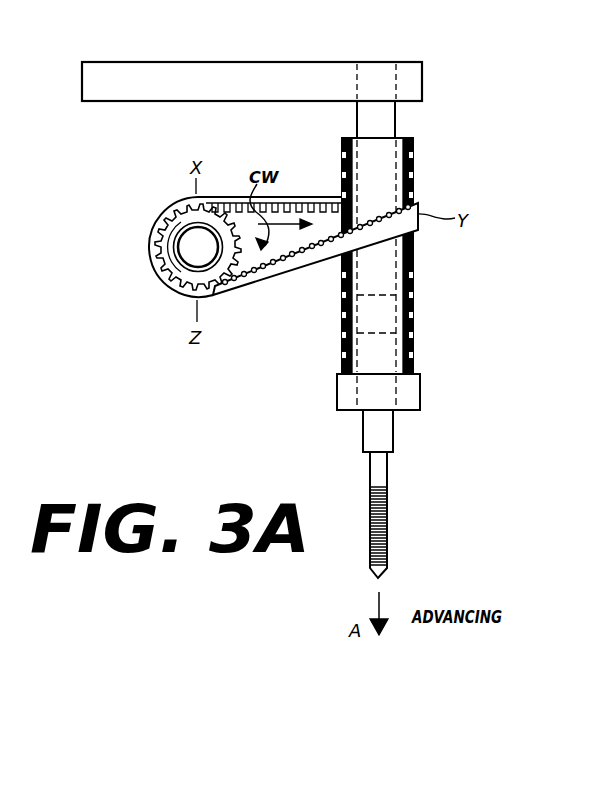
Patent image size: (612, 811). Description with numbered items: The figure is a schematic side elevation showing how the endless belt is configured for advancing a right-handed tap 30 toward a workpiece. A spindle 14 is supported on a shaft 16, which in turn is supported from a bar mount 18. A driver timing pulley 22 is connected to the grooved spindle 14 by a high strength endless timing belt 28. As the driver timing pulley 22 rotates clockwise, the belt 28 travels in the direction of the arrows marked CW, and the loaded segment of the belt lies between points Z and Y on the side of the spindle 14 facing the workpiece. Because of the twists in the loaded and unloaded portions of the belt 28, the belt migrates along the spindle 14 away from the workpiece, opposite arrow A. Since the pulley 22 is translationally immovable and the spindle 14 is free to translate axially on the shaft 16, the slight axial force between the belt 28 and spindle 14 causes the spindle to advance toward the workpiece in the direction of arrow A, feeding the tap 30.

The spindle 14 is at (413, 162).
The shaft 16 is at (385, 120).
The bar mount 18 is at (410, 72).
The driver timing pulley 22 is at (180, 282).
The endless timing belt 28 is at (317, 264).
The tap 30 is at (387, 522).